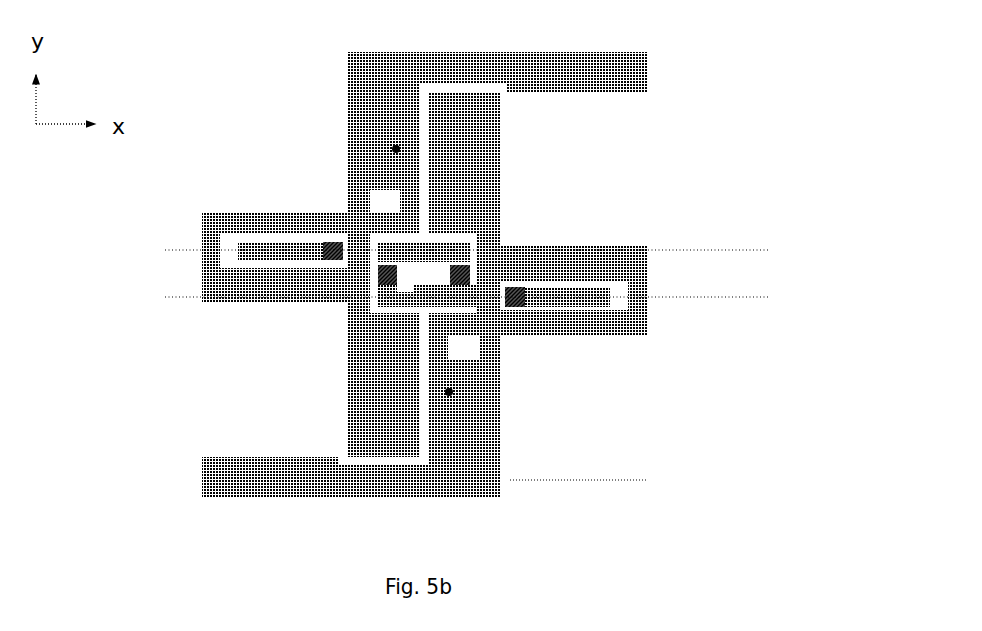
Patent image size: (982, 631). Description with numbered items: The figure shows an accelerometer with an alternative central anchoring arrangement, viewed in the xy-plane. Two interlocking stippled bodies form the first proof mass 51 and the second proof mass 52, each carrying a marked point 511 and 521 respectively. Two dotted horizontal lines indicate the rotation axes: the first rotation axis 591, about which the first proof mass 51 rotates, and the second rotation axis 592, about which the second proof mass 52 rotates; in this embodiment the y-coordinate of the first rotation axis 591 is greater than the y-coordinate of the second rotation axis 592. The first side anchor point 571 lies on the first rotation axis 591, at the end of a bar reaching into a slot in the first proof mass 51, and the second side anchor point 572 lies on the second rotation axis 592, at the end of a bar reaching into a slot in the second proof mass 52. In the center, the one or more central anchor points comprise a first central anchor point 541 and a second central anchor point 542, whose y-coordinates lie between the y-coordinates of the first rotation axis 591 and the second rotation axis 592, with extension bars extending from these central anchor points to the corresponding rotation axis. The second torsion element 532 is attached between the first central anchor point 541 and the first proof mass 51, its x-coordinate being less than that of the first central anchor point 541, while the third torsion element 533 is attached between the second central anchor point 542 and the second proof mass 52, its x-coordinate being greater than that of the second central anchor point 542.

The first proof mass 51 is at (373, 67).
The second proof mass 52 is at (482, 468).
The point on first proof mass 511 is at (384, 145).
The point on second proof mass 521 is at (458, 394).
The second torsion element 532 is at (435, 252).
The third torsion element 533 is at (405, 297).
The first central anchor point 541 is at (472, 270).
The second central anchor point 542 is at (375, 278).
The first side anchor point 571 is at (330, 243).
The second side anchor point 572 is at (513, 307).
The first rotation axis 591 is at (442, 252).
The second rotation axis 592 is at (442, 299).